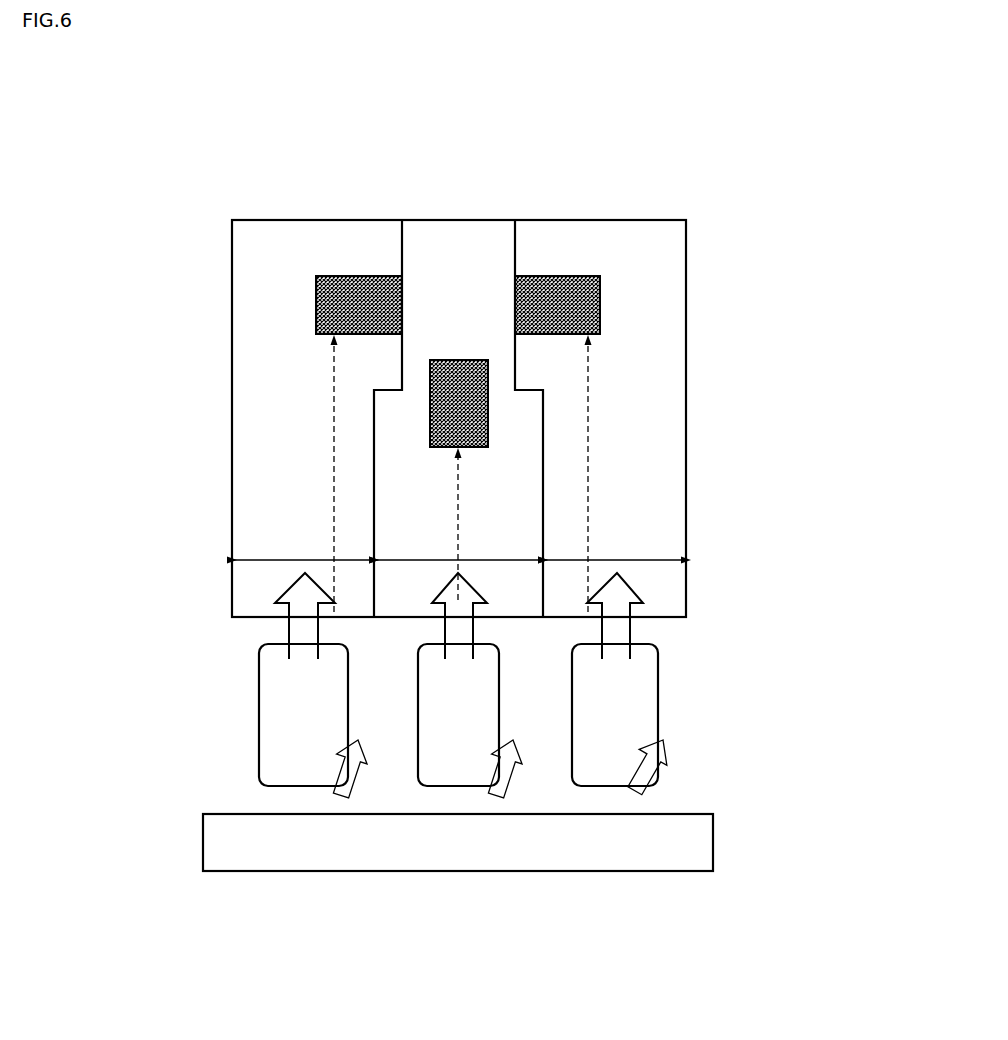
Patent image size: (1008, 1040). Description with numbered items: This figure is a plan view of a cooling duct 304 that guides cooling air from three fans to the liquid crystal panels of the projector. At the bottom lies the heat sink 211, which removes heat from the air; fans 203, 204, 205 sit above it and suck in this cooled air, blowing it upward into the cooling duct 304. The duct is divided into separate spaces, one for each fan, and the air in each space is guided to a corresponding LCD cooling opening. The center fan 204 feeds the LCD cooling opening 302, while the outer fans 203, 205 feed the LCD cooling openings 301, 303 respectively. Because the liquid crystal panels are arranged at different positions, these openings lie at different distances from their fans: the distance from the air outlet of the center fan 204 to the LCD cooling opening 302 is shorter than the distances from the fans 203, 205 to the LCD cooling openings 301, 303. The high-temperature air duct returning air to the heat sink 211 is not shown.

The LCD cooling opening 301 is at (573, 292).
The LCD cooling opening 302 is at (473, 360).
The LCD cooling opening 303 is at (370, 295).
The cooling duct 304 is at (688, 337).
The fan 203 is at (647, 692).
The fan 204 is at (433, 762).
The fan 205 is at (273, 711).
The heat sink 211 is at (492, 871).